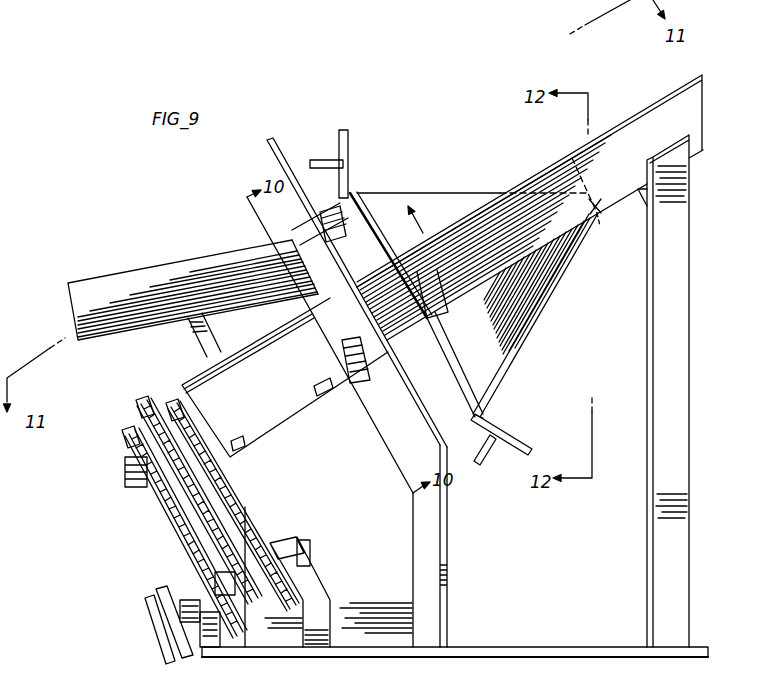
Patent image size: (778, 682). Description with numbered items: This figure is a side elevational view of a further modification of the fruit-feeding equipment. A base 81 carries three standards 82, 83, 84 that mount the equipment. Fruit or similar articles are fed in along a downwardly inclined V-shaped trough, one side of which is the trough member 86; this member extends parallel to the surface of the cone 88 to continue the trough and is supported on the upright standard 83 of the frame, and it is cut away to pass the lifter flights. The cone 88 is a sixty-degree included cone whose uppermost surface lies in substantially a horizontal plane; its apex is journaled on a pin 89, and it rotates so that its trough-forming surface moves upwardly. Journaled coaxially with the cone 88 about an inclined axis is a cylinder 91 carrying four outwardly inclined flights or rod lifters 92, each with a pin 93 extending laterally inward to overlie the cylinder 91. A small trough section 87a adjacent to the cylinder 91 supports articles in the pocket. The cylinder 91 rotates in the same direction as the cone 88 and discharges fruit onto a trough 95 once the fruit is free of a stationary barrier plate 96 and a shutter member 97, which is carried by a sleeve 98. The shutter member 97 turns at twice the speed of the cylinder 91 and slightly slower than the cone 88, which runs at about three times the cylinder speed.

The base 81 is at (566, 650).
The standard 82 is at (322, 604).
The standard 83 is at (443, 548).
The standard 84 is at (665, 532).
The trough member 86 is at (665, 112).
The small trough section 87a is at (437, 322).
The cone 88 is at (393, 193).
The pin 89 is at (600, 218).
The cylinder 91 is at (132, 480).
The rod lifter 92 is at (350, 143).
The pin 93 is at (323, 161).
The trough 95 is at (170, 268).
The stationary barrier plate 96 is at (278, 147).
The shutter member 97 is at (402, 400).
The sleeve 98 is at (338, 344).